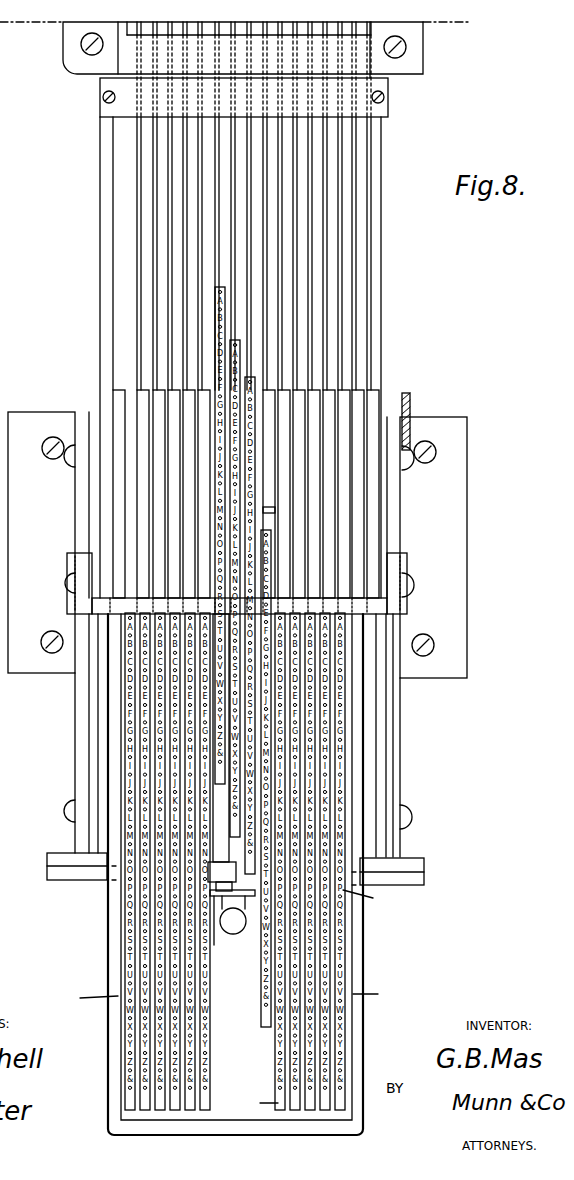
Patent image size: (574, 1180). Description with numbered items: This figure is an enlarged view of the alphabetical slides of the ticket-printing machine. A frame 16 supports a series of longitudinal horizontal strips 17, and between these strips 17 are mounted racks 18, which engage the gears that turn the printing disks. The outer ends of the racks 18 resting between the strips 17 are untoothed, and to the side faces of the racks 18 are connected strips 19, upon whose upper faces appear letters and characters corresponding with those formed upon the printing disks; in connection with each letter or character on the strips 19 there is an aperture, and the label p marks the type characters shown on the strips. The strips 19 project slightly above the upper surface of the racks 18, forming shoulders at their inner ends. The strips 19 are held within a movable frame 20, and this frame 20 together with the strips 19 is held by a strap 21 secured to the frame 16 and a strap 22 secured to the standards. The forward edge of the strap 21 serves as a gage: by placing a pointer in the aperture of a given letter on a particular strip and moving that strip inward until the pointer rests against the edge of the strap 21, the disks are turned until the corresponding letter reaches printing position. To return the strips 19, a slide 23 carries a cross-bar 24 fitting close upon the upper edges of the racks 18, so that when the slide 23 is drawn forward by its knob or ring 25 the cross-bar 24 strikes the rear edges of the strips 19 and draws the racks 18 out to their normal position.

The frame 16 is at (412, 406).
The longitudinal horizontal strips 17 is at (231, 793).
The racks 18 is at (140, 222).
The strips 19 is at (220, 290).
The movable frame 20 is at (360, 1073).
The strap 21 is at (410, 607).
The strap 22 is at (362, 62).
The slide 23 is at (93, 873).
The cross-bar 24 is at (113, 107).
The knob or ring 25 is at (237, 925).
The type character p is at (229, 1001).